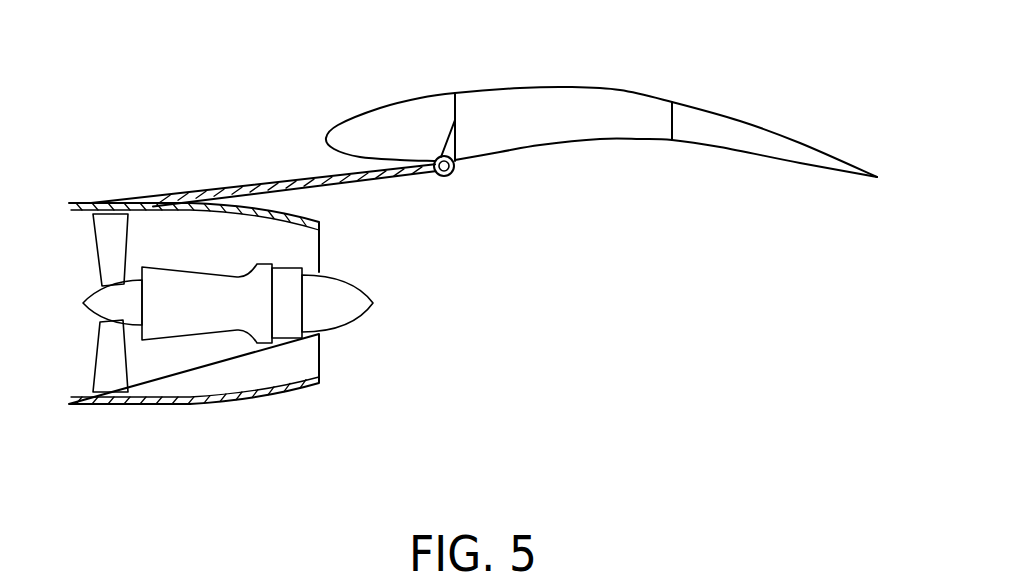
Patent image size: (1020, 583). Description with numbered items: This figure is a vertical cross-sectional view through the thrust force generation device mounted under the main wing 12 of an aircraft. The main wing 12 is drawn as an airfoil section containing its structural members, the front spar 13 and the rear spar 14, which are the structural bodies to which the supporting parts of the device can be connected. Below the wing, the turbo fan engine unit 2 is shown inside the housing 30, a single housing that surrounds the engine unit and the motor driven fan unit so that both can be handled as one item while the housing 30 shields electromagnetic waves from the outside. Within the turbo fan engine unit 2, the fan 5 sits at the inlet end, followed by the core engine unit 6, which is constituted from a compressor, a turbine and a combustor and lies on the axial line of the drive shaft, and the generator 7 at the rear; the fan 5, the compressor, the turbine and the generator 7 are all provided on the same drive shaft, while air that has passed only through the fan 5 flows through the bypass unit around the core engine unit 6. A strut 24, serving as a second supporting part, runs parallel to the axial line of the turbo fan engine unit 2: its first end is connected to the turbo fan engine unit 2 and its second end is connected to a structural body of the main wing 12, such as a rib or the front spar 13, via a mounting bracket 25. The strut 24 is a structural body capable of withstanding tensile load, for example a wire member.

The turbo fan engine unit 2 is at (189, 407).
The fan 5 is at (114, 227).
The core engine unit 6 is at (198, 279).
The generator 7 is at (292, 335).
The main wing 12 is at (567, 87).
The front spar 13 is at (457, 106).
The rear spar 14 is at (672, 120).
The strut 24 is at (372, 180).
The mounting bracket 25 is at (465, 170).
The housing 30 is at (257, 402).